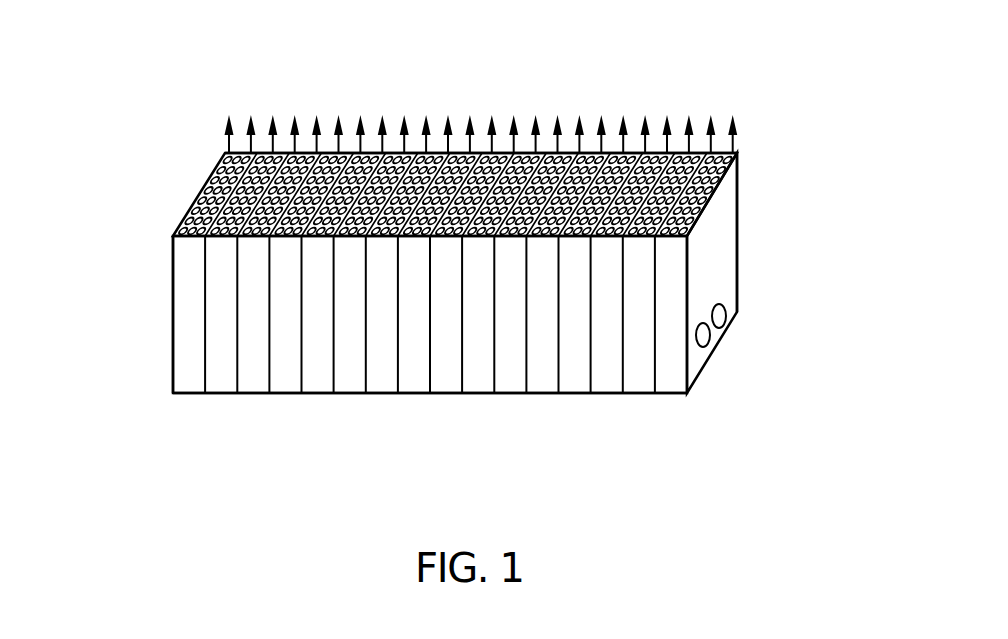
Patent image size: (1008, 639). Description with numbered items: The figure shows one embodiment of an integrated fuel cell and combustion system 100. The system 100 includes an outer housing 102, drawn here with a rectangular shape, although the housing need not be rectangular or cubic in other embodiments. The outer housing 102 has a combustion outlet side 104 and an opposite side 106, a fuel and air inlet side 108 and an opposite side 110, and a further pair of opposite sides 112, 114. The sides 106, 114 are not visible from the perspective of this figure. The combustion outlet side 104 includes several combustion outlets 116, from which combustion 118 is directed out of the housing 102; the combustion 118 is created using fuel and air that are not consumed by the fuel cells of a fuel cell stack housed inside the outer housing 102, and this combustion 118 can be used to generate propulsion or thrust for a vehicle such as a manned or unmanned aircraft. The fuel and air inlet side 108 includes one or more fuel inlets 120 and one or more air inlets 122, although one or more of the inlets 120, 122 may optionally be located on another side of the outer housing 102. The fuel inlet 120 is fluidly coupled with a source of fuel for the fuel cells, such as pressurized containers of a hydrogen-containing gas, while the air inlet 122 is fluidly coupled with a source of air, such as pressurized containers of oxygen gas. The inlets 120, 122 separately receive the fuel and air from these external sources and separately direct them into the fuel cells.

The integrated fuel cell and combustion system 100 is at (291, 69).
The outer housing 102 is at (178, 218).
The combustion outlet side 104 is at (694, 154).
The opposite side 106 is at (571, 395).
The fuel and air inlet side 108 is at (699, 282).
The opposite side 110 is at (173, 281).
The side 112 is at (468, 357).
The side 114 is at (739, 189).
The combustion outlets 116 is at (495, 166).
The combustion 118 is at (226, 140).
The fuel inlet 120 is at (713, 348).
The air inlet 122 is at (722, 318).